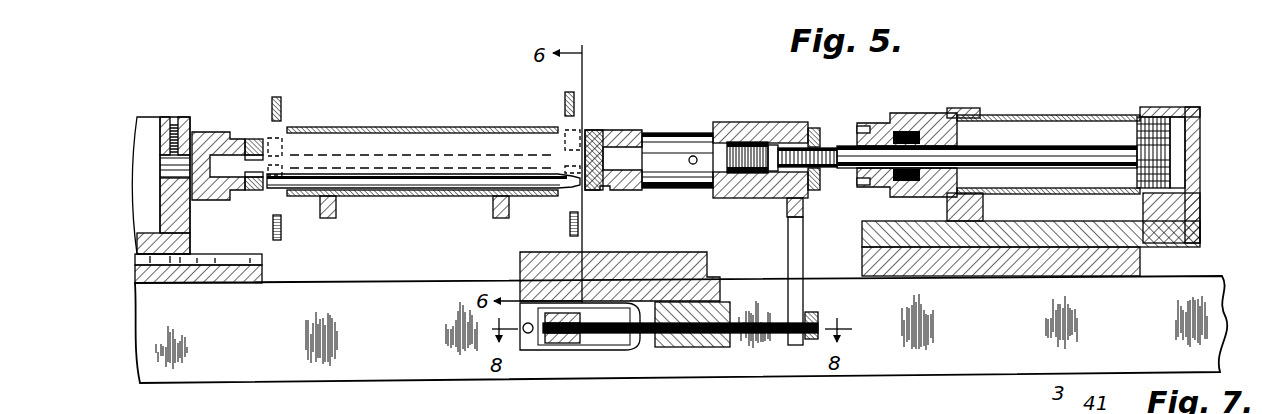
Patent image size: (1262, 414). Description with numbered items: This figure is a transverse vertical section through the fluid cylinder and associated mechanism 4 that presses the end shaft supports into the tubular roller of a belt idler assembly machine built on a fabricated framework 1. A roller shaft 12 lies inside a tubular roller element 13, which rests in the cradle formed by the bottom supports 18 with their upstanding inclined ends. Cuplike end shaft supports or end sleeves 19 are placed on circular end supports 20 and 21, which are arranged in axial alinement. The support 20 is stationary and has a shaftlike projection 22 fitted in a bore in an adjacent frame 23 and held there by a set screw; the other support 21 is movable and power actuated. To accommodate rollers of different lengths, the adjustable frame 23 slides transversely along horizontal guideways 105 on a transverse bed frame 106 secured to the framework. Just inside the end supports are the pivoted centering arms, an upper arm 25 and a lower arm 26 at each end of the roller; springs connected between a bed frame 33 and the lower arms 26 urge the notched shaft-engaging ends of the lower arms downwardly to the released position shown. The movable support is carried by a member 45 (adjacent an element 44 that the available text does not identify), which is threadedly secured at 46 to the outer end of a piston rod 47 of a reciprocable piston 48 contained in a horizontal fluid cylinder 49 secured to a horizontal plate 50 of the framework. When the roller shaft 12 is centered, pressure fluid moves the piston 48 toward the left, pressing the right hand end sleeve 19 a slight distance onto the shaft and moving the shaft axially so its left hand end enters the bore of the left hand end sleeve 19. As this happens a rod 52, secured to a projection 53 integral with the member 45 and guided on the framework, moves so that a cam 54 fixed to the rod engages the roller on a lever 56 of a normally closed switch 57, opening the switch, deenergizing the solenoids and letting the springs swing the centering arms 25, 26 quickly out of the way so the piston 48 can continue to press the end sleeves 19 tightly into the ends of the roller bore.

The fabricated framework 1 is at (375, 385).
The fluid cylinder and associated mechanism 4 is at (1168, 108).
The roller shaft 12 is at (358, 177).
The tubular roller element 13 is at (492, 127).
The bottom supports 18 is at (493, 208).
The end shaft supports 19 is at (247, 137).
The circular end support 20 is at (230, 200).
The circular end support 21 is at (631, 189).
The shaftlike projection 22 is at (162, 160).
The adjustable frame 23 is at (163, 223).
The upper centering arm 25 is at (278, 100).
The lower centering arm 26 is at (282, 236).
The bed frame 33 is at (690, 251).
The spring housing 44 is at (738, 157).
The member 45 is at (765, 147).
The threaded connection 46 is at (802, 143).
The piston rod 47 is at (840, 146).
The reciprocable piston 48 is at (1134, 117).
The horizontal fluid cylinder 49 is at (1020, 115).
The horizontal plate 50 is at (1140, 262).
The rod 52 is at (665, 347).
The projection 53 is at (806, 293).
The cam 54 is at (567, 340).
The lever 56 is at (537, 342).
The normally closed switch 57 is at (618, 350).
The horizontal guideways 105 is at (227, 252).
The transverse bed frame 106 is at (263, 272).